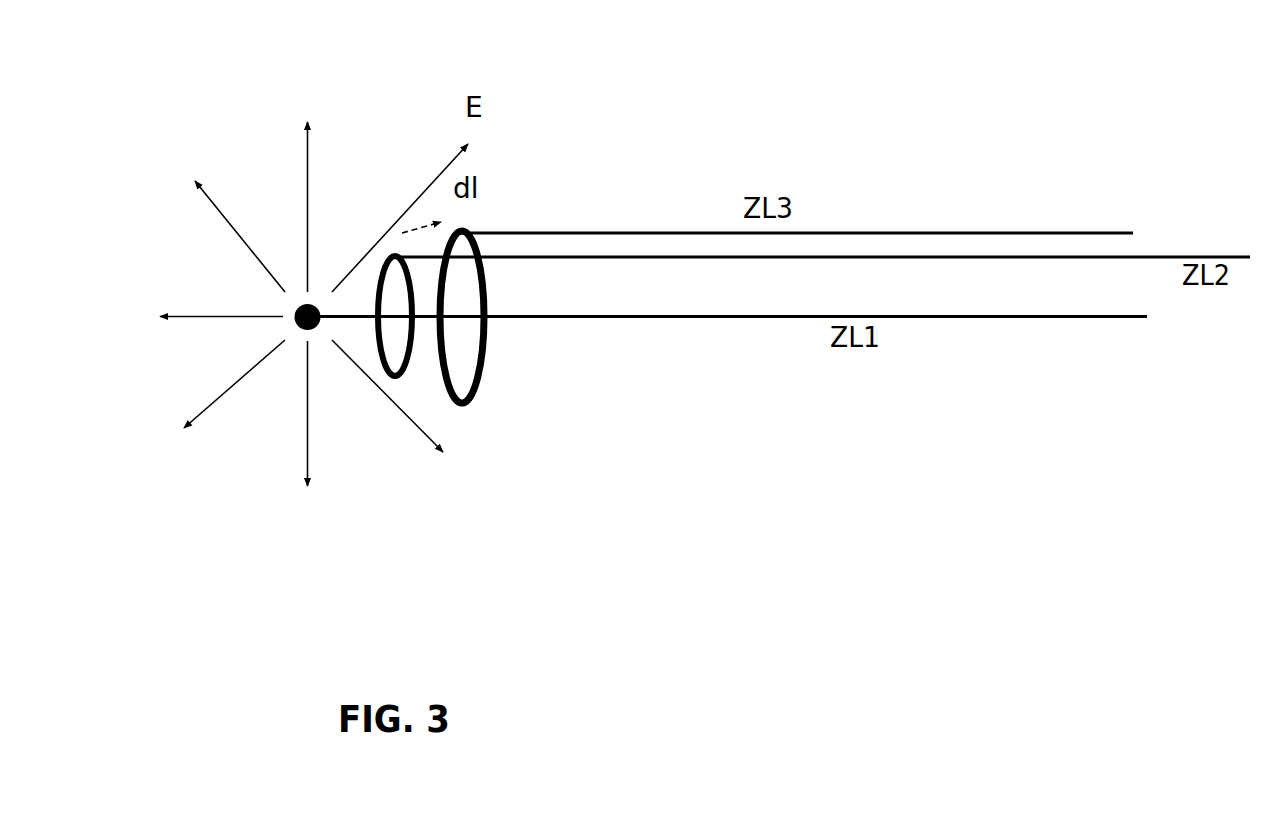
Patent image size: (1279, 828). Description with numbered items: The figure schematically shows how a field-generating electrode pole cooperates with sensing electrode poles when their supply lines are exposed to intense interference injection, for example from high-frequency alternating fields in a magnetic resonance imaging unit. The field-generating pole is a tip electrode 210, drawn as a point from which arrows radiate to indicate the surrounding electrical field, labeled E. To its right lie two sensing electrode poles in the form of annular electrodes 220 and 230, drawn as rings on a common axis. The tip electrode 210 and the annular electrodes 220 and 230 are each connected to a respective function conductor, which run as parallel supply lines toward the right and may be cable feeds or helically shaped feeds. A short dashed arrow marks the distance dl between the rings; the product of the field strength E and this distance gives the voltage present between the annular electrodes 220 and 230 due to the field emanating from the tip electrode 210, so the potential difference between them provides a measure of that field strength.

The tip electrode 210 is at (302, 300).
The annular electrode 220 is at (403, 380).
The annular electrode 230 is at (480, 380).